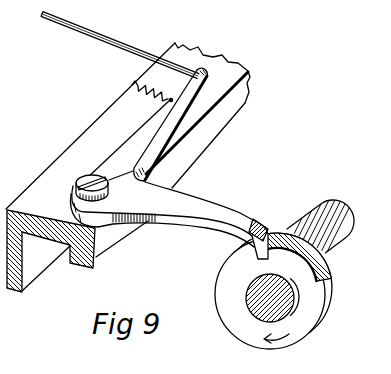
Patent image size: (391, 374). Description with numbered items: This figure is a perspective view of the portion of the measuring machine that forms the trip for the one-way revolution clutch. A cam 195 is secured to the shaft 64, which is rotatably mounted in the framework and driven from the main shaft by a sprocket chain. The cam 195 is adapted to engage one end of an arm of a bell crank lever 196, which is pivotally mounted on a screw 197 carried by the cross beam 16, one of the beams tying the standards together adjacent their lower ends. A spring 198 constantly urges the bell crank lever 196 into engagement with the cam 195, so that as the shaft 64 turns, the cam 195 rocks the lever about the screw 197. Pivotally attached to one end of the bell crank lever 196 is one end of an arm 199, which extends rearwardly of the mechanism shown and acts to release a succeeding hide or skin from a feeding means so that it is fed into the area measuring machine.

The cross beam 16 is at (103, 250).
The shaft 64 is at (247, 290).
The cam 195 is at (283, 228).
The bell crank lever 196 is at (205, 203).
The screw 197 is at (87, 182).
The spring 198 is at (133, 87).
The arm 199 is at (107, 43).